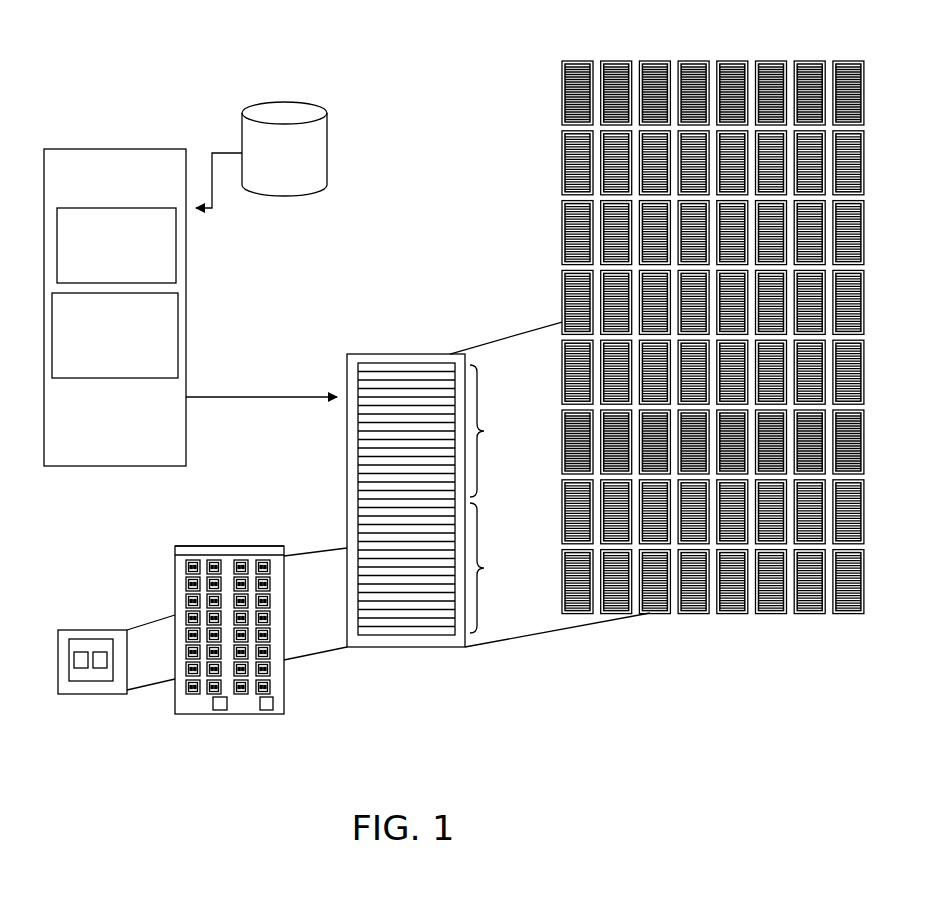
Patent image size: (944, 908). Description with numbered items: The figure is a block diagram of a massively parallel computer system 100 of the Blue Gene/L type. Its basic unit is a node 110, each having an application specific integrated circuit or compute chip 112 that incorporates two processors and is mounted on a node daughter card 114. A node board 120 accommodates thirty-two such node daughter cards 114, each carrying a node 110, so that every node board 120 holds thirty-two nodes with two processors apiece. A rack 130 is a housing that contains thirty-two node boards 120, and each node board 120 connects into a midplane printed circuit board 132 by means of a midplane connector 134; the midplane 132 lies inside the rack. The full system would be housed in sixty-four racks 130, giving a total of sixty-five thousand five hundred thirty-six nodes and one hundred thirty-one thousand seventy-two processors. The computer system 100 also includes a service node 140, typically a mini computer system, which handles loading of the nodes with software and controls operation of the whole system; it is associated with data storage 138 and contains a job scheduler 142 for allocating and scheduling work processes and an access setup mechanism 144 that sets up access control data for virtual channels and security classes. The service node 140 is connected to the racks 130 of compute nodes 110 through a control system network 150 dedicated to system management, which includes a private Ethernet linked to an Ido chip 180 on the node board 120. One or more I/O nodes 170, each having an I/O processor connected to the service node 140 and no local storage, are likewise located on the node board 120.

The massively parallel computer system 100 is at (165, 80).
The node 110 is at (73, 630).
The application specific integrated circuit (compute chip) 112 is at (67, 688).
The node daughter card 114 is at (102, 688).
The node board 120 is at (284, 598).
The rack 130 is at (383, 354).
The midplane printed circuit board 132 is at (513, 499).
The midplane connector 134 is at (175, 550).
The data storage 138 is at (327, 128).
The service node 140 is at (115, 307).
The job scheduler 142 is at (176, 249).
The access setup mechanism 144 is at (178, 347).
The control system network 150 is at (228, 398).
The I/O node 170 is at (222, 710).
The Ido chip 180 is at (270, 710).